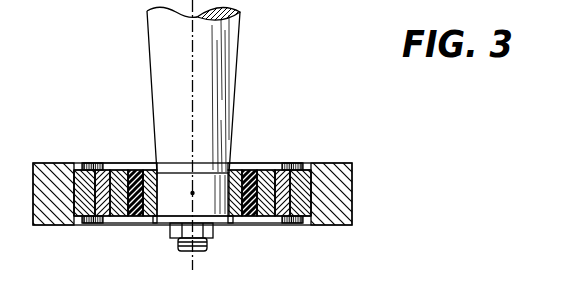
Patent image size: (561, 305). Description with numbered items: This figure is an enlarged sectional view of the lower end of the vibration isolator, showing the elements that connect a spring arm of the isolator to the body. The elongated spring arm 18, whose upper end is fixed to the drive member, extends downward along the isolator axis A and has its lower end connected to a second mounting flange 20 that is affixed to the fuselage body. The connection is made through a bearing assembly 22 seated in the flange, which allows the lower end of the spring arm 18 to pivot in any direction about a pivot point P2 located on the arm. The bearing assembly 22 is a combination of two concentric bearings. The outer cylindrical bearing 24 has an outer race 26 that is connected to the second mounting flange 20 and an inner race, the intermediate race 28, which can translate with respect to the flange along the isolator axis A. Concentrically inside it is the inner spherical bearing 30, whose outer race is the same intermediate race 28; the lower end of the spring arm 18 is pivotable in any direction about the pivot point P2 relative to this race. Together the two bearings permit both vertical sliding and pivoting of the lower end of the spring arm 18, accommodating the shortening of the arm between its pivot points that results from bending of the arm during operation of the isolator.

The spring arm 18 is at (228, 43).
The second mounting flange 20 is at (352, 164).
The bearing assembly 22 is at (123, 229).
The outer cylindrical bearing 24 is at (97, 162).
The outer race 26 is at (298, 168).
The intermediate race 28 is at (266, 212).
The inner spherical bearing 30 is at (143, 162).
The pivot point P2 is at (193, 193).
The isolator axis A is at (192, 145).